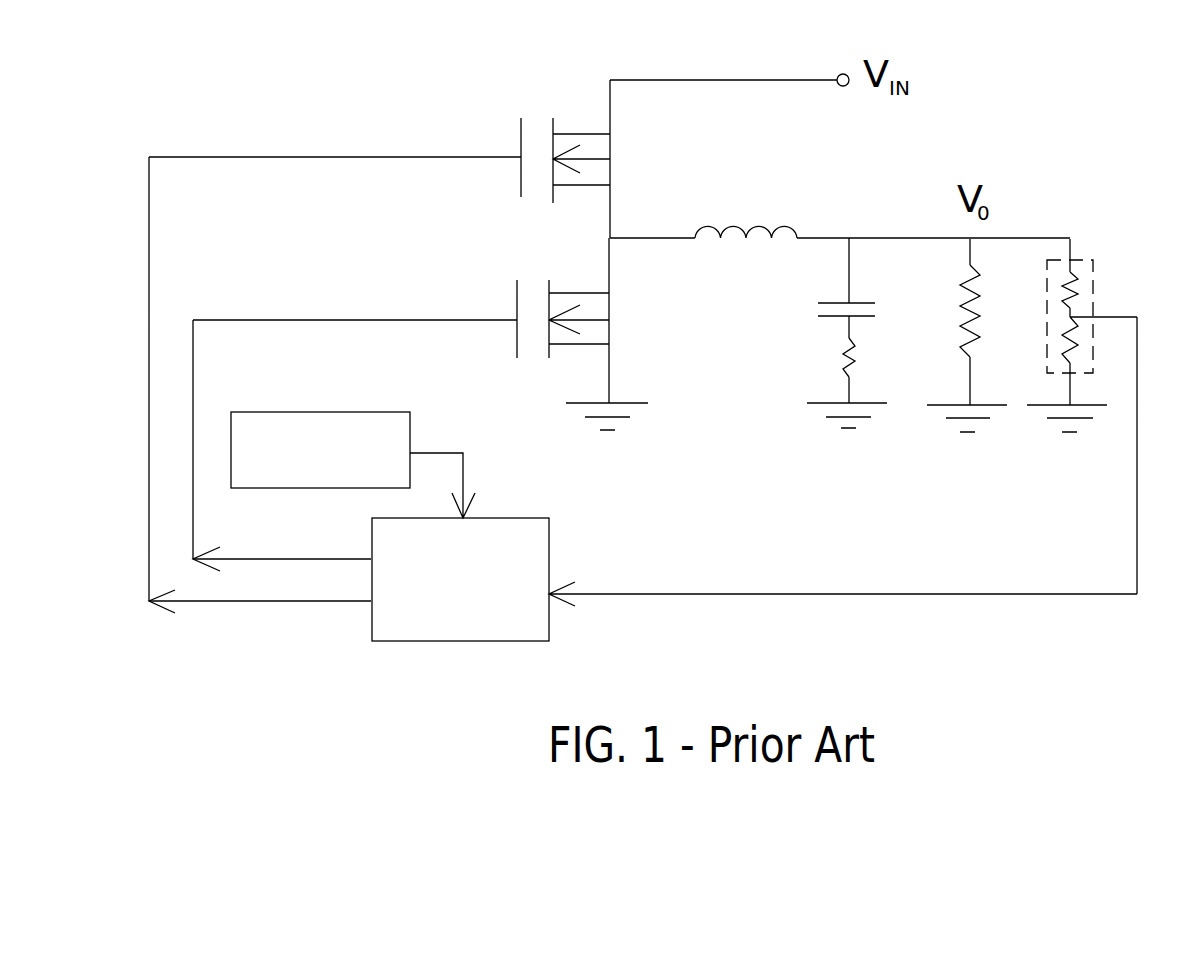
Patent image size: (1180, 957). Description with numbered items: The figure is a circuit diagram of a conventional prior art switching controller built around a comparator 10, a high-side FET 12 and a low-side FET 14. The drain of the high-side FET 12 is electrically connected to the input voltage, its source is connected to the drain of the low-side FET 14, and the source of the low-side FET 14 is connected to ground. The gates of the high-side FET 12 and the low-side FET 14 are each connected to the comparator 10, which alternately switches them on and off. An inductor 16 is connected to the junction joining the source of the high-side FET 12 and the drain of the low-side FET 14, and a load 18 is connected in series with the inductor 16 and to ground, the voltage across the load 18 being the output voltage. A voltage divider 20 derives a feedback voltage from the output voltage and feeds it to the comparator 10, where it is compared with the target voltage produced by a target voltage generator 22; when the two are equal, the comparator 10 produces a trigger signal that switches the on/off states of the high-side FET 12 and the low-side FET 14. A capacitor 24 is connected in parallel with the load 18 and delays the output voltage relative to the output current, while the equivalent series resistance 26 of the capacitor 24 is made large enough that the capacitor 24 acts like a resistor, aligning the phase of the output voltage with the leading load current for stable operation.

The comparator 10 is at (440, 641).
The high-side FET 12 is at (521, 130).
The low-side FET 14 is at (517, 290).
The inductor 16 is at (735, 222).
The load 18 is at (967, 286).
The voltage divider 20 is at (1093, 288).
The target voltage generator 22 is at (411, 426).
The capacitor 24 is at (818, 316).
The equivalent series resistance 26 is at (848, 358).